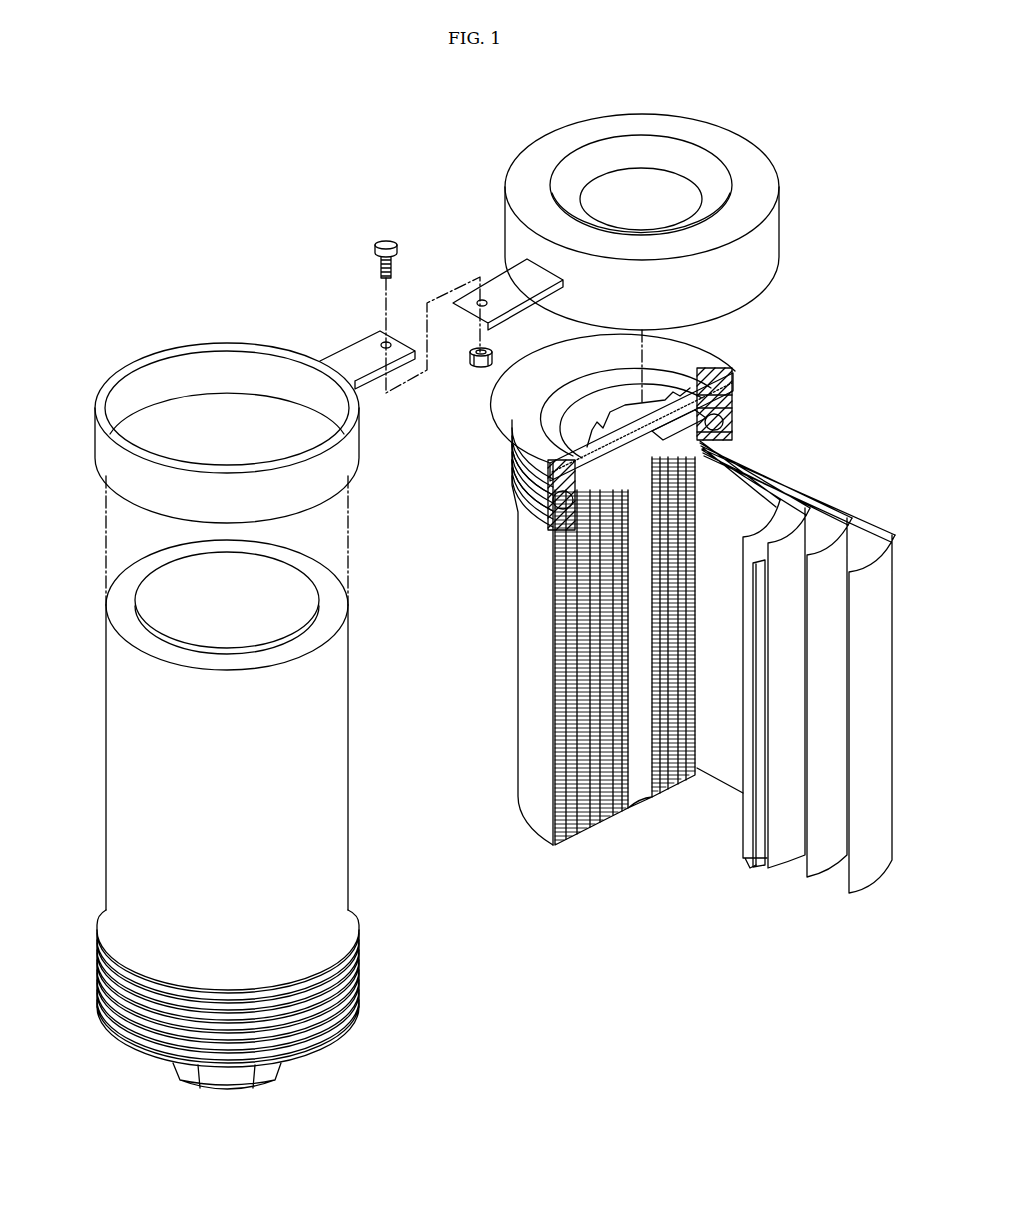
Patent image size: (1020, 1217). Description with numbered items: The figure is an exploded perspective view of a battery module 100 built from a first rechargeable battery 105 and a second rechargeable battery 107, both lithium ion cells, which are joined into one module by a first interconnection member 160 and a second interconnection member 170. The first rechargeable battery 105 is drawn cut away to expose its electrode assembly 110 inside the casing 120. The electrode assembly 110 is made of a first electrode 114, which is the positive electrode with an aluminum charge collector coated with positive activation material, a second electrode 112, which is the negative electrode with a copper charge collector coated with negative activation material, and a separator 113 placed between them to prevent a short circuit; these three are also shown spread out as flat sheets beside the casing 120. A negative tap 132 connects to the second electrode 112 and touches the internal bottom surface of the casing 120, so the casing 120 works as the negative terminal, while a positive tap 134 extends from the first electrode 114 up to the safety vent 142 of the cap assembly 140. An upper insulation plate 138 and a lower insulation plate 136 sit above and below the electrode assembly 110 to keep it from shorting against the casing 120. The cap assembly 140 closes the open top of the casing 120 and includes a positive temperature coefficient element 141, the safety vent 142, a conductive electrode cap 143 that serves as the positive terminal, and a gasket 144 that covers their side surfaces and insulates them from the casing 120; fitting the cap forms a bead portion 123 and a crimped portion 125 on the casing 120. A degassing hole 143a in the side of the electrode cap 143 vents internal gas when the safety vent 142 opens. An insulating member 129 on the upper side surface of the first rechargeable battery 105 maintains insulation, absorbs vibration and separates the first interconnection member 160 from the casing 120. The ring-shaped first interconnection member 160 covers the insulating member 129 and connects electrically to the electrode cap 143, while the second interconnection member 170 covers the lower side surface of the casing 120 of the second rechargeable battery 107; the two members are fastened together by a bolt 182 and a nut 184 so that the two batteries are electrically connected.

The battery module 100 is at (487, 91).
The first rechargeable battery 105 is at (812, 332).
The second rechargeable battery 107 is at (360, 587).
The electrode assembly 110 is at (850, 950).
The second electrode 112 is at (749, 866).
The separator 113 is at (787, 858).
The first electrode 114 is at (820, 867).
The casing 120 is at (348, 785).
The bead portion 123 is at (535, 507).
The crimped portion 125 is at (530, 487).
The insulating member 129 is at (512, 460).
The negative tap 132 is at (760, 822).
The positive tap 134 is at (750, 453).
The lower insulation plate 136 is at (622, 812).
The upper insulation plate 138 is at (545, 530).
The cap assembly 140 is at (797, 343).
The positive temperature coefficient element 141 is at (718, 385).
The safety vent 142 is at (718, 402).
The electrode cap 143 is at (722, 360).
The degassing hole 143a is at (520, 441).
The gasket 144 is at (718, 418).
The first interconnection member 160 is at (745, 136).
The second interconnection member 170 is at (216, 341).
The bolt 182 is at (386, 238).
The nut 184 is at (481, 368).